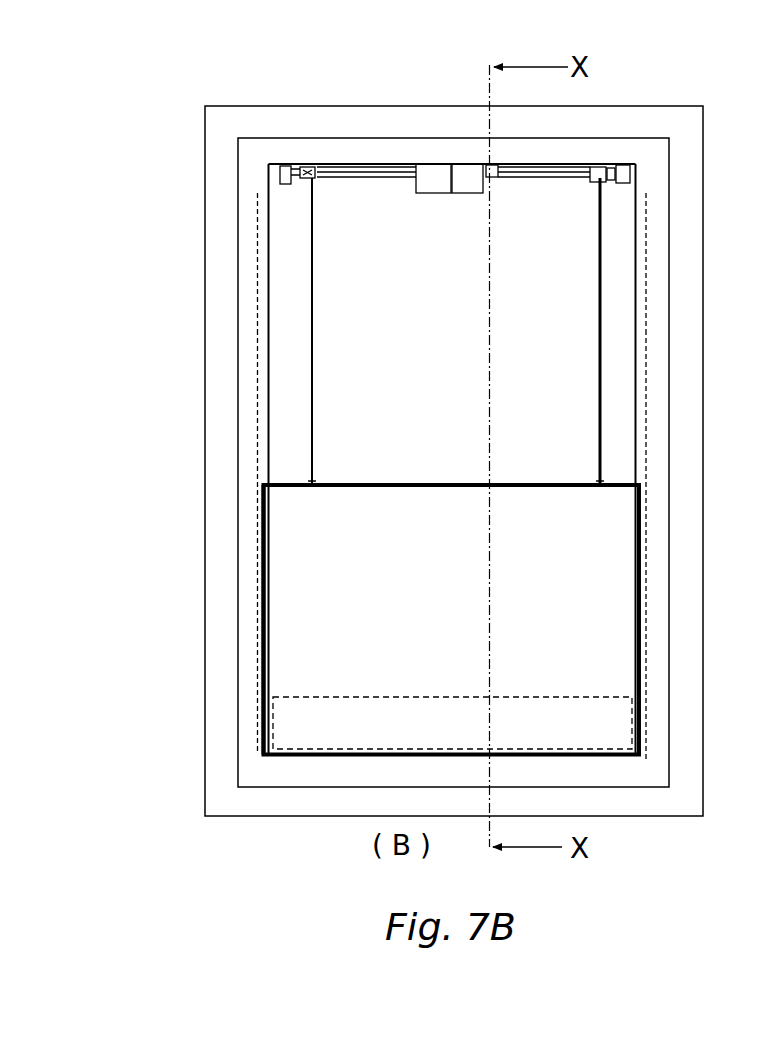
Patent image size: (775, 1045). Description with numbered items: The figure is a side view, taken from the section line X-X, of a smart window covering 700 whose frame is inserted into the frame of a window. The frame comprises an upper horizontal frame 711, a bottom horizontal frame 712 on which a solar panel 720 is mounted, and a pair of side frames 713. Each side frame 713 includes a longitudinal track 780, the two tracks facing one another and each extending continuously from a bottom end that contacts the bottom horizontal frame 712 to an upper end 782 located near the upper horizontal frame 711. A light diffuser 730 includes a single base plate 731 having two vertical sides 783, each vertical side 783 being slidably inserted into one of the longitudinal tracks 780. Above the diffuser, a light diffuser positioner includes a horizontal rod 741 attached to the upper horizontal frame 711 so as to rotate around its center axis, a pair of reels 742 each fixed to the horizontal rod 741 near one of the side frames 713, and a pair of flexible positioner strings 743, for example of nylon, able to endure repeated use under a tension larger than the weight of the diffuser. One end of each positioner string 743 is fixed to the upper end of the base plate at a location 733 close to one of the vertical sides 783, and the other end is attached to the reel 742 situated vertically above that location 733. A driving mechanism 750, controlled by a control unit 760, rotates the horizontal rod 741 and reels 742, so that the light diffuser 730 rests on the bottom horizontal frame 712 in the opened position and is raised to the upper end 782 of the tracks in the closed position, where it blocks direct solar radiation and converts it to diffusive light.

The smart window covering 700 is at (117, 100).
The upper horizontal frame 711 is at (358, 153).
The bottom horizontal frame 712 is at (330, 775).
The side frame 713 is at (252, 408).
The solar panel 720 is at (387, 712).
The light diffuser 730 is at (402, 467).
The single base plate 731 is at (447, 505).
The location 733 is at (315, 480).
The horizontal rod 741 is at (383, 180).
The reel 742 is at (315, 179).
The positioner string 743 is at (315, 308).
The driving mechanism 750 is at (443, 183).
The control unit 760 is at (470, 183).
The longitudinal track 780 is at (260, 372).
The upper end of the longitudinal track 782 is at (258, 197).
The vertical side 783 is at (265, 605).